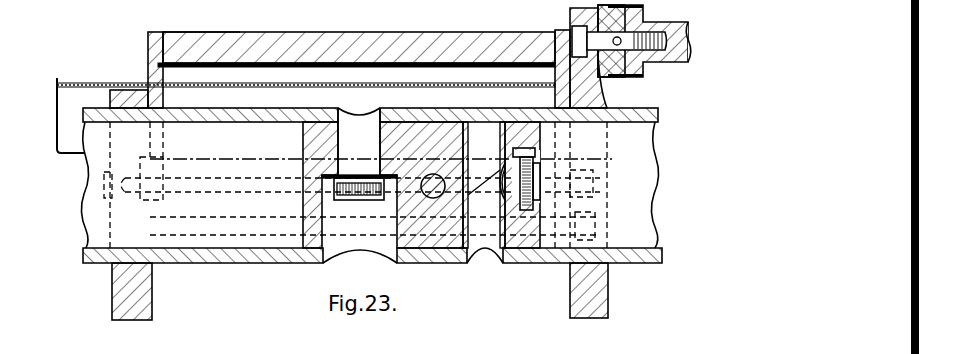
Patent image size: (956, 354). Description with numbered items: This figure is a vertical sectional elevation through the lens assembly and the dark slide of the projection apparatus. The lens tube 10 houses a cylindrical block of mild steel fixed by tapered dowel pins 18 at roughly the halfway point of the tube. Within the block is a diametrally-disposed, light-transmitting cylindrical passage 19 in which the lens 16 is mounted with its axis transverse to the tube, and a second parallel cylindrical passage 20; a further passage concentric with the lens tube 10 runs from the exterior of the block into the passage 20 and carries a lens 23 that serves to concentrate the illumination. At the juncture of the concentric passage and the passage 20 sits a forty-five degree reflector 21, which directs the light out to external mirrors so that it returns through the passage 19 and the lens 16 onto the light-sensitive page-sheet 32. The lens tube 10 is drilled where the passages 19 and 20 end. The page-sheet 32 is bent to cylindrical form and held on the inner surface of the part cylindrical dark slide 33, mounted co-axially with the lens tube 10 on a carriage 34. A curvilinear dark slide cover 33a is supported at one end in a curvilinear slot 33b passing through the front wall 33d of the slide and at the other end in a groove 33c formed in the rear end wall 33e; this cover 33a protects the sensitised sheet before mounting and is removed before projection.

The lens tube 10 is at (623, 107).
The lens 16 is at (370, 200).
The tapered dowel pins 18 is at (436, 199).
The cylindrical passage 19 is at (357, 133).
The cylindrical passage 20 is at (483, 228).
The 45° reflector 21 is at (470, 192).
The lens 23 is at (545, 173).
The light-sensitive page-sheet 32 is at (423, 67).
The dark slide 33 is at (382, 14).
The dark slide cover 33a is at (277, 84).
The curvilinear slot 33b is at (195, 33).
The groove 33c is at (560, 60).
The front wall 33d is at (157, 65).
The rear end wall 33e is at (566, 30).
The carriage 34 is at (147, 294).